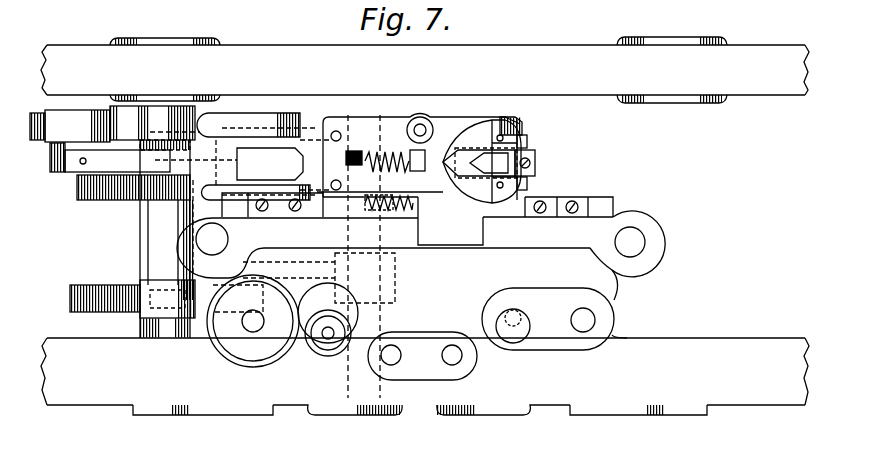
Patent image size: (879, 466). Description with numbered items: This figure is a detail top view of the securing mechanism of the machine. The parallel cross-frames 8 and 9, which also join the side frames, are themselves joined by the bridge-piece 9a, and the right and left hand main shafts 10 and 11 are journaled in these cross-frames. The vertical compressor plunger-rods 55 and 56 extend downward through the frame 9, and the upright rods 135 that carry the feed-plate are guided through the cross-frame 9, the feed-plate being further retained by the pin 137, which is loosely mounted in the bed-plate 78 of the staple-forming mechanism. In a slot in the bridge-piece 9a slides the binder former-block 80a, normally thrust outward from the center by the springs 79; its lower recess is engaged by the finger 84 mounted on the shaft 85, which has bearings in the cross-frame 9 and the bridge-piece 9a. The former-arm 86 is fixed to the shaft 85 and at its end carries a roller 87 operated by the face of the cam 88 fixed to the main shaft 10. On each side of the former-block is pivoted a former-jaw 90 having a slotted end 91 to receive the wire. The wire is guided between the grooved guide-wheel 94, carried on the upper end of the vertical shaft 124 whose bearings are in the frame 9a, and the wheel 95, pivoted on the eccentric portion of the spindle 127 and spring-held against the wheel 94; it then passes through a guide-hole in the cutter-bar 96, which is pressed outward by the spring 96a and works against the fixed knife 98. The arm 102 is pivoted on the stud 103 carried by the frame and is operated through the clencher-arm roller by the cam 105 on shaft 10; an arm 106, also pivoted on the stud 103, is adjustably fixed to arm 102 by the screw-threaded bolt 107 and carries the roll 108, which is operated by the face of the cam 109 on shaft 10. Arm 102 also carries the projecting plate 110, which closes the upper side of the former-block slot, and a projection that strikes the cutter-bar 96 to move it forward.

The cross-frame 8 is at (425, 70).
The cross-frame 9 is at (425, 376).
The bridge-piece 9a is at (457, 113).
The main shaft 10 is at (153, 228).
The main shaft 11 is at (678, 100).
The compressor plunger-rod 55 is at (212, 239).
The compressor plunger-rod 56 is at (633, 240).
The bed-plate 78 is at (519, 122).
The spring 79 is at (402, 165).
The binder former-block 80a is at (489, 161).
The finger 84 is at (357, 157).
The shaft 85 is at (364, 257).
The former-arm 86 is at (319, 278).
The roller 87 is at (157, 297).
The cam 88 is at (98, 305).
The former-jaw 90 is at (491, 162).
The slotted end 91 is at (528, 138).
The grooved guide-wheel 94 is at (253, 321).
The wheel 95 is at (328, 338).
The cutter-bar 96 is at (277, 207).
The spring 96a is at (398, 205).
The knife 98 is at (362, 200).
The arm 102 is at (187, 152).
The stud 103 is at (240, 217).
The cam 105 is at (85, 202).
The arm 106 is at (63, 168).
The screw-threaded bolt 107 is at (117, 161).
The roll 108 is at (53, 132).
The cam 109 is at (140, 126).
The projecting plate 110 is at (263, 156).
The vertical shaft 124 is at (257, 318).
The spindle 127 is at (347, 312).
The upright rod 135 is at (396, 352).
The pin 137 is at (420, 122).